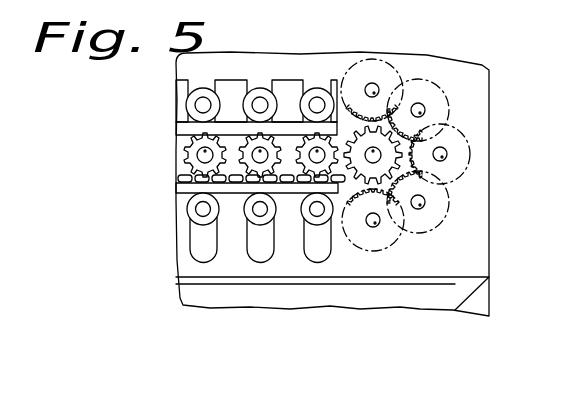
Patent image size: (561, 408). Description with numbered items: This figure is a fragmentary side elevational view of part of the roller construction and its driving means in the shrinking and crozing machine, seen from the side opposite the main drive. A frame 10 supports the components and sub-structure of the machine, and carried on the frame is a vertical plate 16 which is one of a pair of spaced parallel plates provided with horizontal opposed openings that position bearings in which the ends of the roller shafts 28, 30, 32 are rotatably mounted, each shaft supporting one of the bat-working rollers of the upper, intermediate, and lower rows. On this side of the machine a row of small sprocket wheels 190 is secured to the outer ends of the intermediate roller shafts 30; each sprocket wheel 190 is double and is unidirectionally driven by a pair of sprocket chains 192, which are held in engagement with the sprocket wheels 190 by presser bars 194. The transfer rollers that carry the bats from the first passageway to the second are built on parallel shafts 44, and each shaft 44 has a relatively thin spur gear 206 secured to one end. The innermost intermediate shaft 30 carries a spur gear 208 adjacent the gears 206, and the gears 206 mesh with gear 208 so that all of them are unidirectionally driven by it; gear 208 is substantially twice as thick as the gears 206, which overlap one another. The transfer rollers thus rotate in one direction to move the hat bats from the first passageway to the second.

The frame 10 is at (183, 296).
The vertical plate 16 is at (263, 56).
The roller shaft 28 is at (196, 105).
The roller shaft 30 is at (195, 155).
The roller shaft 32 is at (200, 209).
The transfer roller shaft 44 is at (377, 88).
The small sprocket wheel 190 is at (357, 145).
The sprocket chain 192 is at (182, 178).
The presser bar 194 is at (180, 187).
The spur gear 206 is at (353, 72).
The spur gear 208 is at (371, 183).